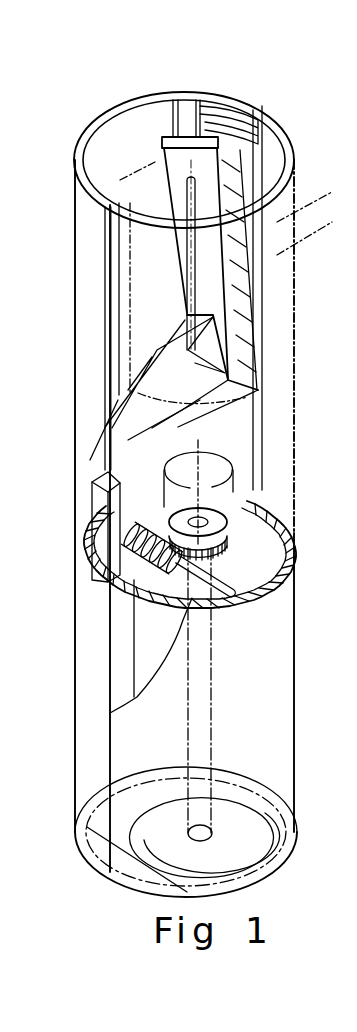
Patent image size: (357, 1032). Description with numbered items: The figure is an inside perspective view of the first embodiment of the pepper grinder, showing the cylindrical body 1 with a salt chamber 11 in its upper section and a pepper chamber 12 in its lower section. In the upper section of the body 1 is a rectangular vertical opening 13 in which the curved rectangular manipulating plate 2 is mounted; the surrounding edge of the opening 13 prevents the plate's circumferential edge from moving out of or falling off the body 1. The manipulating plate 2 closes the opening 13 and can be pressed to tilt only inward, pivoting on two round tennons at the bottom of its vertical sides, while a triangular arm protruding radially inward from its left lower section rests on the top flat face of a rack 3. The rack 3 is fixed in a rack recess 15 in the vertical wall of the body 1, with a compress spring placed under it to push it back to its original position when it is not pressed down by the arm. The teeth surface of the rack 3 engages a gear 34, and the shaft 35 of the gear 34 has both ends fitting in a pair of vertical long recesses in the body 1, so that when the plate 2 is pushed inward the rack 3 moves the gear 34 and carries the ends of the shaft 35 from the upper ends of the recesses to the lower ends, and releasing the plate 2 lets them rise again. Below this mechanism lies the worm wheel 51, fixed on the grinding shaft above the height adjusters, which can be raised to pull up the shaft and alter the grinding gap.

The body 1 is at (178, 494).
The salt chamber 11 is at (150, 208).
The pepper chamber 12 is at (142, 735).
The rectangular vertical opening 13 is at (237, 118).
The manipulating plate 2 is at (211, 280).
The rack 3 is at (77, 527).
The gear 34 is at (120, 539).
The shaft 35 is at (118, 556).
The rack recess 15 is at (90, 568).
The worm wheel 51 is at (223, 512).